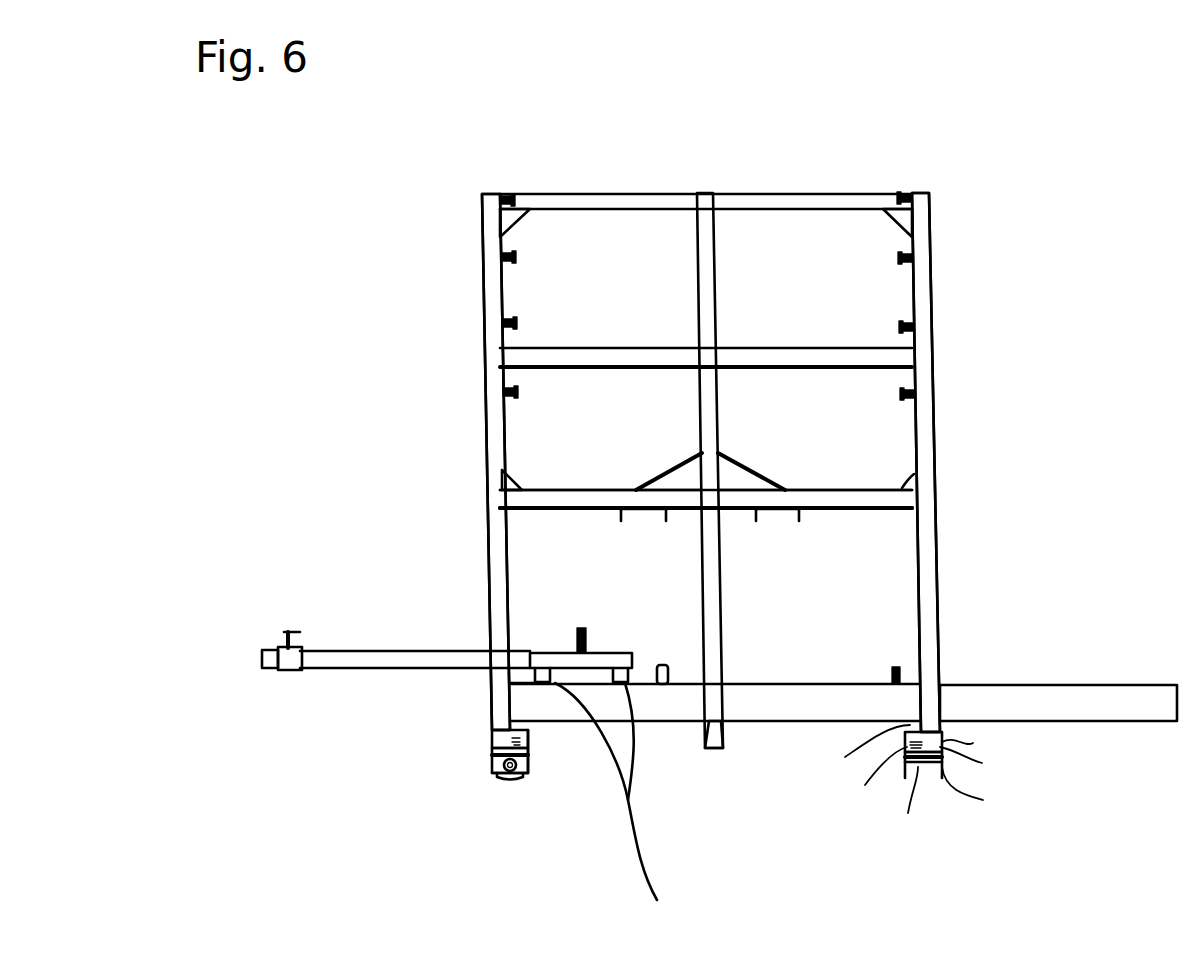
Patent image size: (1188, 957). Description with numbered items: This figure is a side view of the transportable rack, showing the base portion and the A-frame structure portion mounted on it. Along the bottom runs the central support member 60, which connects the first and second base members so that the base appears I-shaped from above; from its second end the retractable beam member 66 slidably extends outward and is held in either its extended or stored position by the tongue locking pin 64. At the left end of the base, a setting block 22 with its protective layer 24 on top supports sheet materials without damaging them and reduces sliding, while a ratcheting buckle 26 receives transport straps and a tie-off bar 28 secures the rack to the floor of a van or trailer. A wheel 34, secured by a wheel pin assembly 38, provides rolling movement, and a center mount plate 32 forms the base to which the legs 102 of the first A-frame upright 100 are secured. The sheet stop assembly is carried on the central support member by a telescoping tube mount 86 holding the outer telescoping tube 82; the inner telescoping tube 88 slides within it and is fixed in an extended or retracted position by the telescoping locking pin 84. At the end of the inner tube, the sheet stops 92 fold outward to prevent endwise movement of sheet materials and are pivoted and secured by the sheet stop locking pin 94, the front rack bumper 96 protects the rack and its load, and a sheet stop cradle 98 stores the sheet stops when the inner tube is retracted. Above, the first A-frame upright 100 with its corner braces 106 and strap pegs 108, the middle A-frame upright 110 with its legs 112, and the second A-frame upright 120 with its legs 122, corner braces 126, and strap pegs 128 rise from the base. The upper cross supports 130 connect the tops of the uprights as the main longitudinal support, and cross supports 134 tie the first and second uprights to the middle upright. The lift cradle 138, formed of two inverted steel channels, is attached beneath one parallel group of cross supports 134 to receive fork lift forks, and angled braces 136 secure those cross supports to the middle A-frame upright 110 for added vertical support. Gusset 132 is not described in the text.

The setting block 22 is at (492, 745).
The protective layer 24 is at (490, 733).
The ratcheting buckle 26 is at (518, 748).
The tie-off bar 28 is at (520, 760).
The center mount plate 32 is at (515, 735).
The wheel 34 is at (514, 778).
The wheel pin assembly 38 is at (492, 766).
The central support member 60 is at (765, 710).
The tongue locking pin 64 is at (900, 667).
The retractable beam member 66 is at (1100, 707).
The outer telescoping tube 82 is at (555, 653).
The telescoping locking pin 84 is at (578, 628).
The telescoping tube mount 86 is at (618, 802).
The inner telescoping tube 88 is at (347, 652).
The sheet stop 92 is at (284, 671).
The sheet stop locking pin 94 is at (287, 631).
The front rack bumper 96 is at (263, 660).
The sheet stop cradle 98 is at (663, 684).
The first A-frame upright 100 is at (480, 285).
The leg 102 is at (490, 212).
The corner brace 106 is at (505, 482).
The strap peg 108 is at (505, 195).
The middle A-frame upright 110 is at (704, 188).
The leg 112 is at (713, 737).
The second A-frame upright 120 is at (934, 294).
The leg 122 is at (928, 572).
The corner brace 126 is at (903, 487).
The strap peg 128 is at (902, 195).
The upper cross support 130 is at (787, 205).
The corner gusset 132 is at (512, 220).
The cross support 134 is at (520, 353).
The angled brace 136 is at (660, 470).
The lift cradle 138 is at (620, 512).